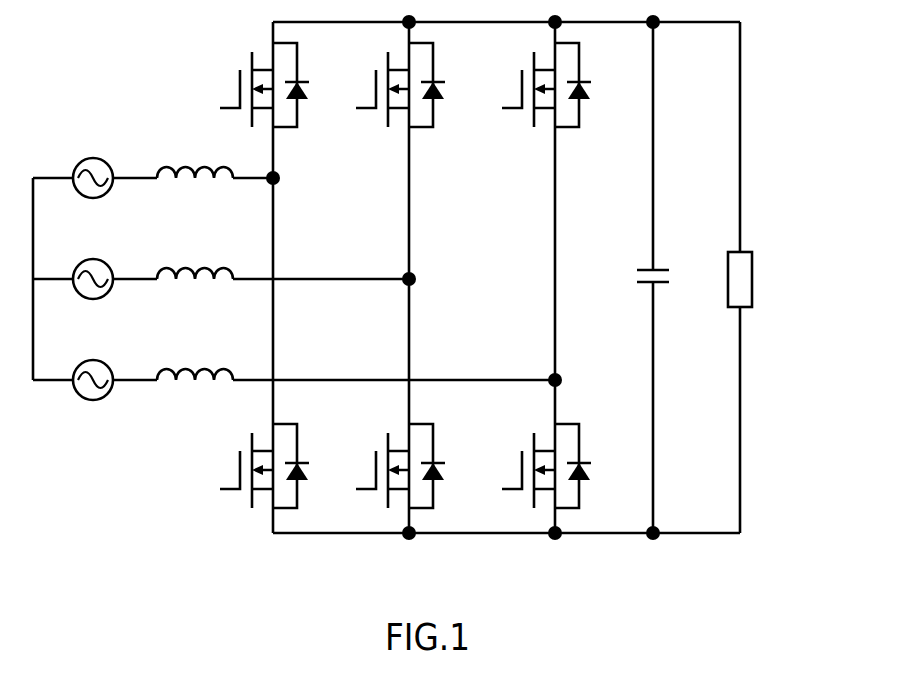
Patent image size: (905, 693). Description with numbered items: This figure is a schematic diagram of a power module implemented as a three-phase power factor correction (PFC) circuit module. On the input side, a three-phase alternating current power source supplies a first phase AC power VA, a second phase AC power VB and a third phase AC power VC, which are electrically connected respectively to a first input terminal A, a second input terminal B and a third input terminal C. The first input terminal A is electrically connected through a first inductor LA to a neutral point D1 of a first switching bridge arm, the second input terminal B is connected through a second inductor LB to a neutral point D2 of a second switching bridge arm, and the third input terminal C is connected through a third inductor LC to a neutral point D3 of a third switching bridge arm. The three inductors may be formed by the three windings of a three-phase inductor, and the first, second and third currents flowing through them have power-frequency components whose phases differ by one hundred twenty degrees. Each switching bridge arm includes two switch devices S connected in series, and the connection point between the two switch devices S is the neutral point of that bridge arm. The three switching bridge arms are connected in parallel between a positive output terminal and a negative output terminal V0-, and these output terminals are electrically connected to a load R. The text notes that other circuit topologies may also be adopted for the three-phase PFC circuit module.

The neutral point of the first switching bridge arm D1 is at (304, 181).
The neutral point of the second switching bridge arm D2 is at (437, 279).
The neutral point of the third switching bridge arm D3 is at (583, 381).
The switch device S is at (420, 275).
The first phase AC power VA is at (93, 154).
The second phase AC power VB is at (93, 260).
The third phase AC power VC is at (95, 359).
The first inductor LA is at (195, 151).
The second inductor LB is at (195, 253).
The third inductor LC is at (195, 354).
The first input terminal A is at (153, 154).
The second input terminal B is at (221, 255).
The third input terminal C is at (294, 359).
The load R is at (771, 277).
The negative output terminal V0- is at (812, 523).